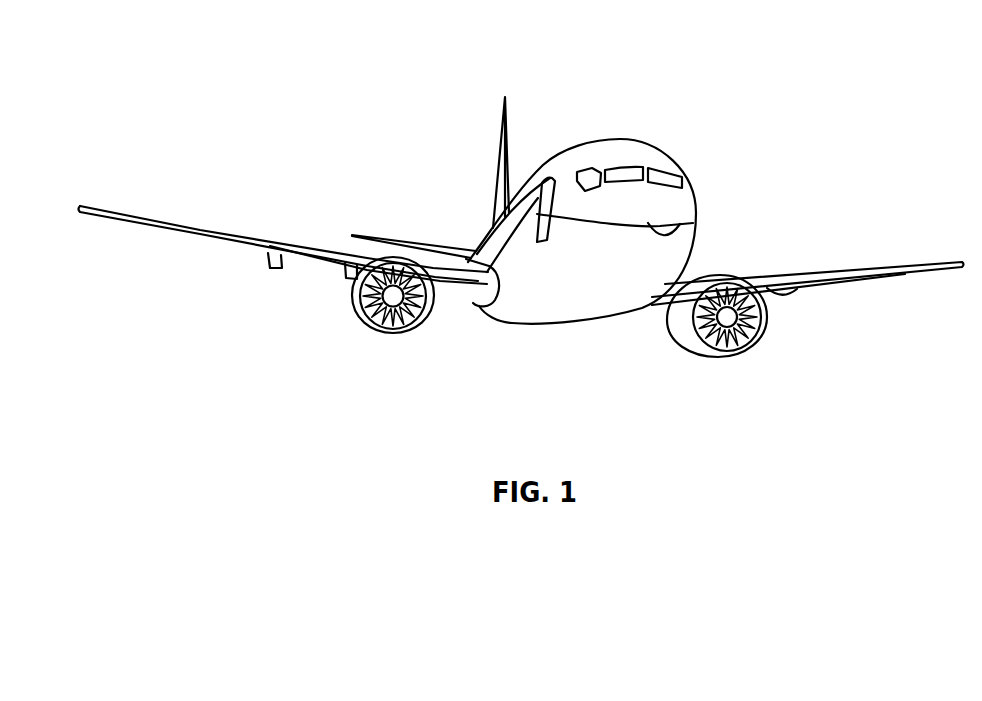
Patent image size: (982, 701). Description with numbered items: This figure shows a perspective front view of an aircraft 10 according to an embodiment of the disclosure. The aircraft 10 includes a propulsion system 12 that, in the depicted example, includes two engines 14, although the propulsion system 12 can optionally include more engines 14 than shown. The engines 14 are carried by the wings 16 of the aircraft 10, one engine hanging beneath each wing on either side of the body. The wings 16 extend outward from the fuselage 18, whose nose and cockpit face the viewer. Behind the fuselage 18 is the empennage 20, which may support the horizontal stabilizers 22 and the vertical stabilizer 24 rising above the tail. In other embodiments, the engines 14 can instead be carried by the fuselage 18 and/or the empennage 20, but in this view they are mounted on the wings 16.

The aircraft 10 is at (300, 77).
The propulsion system 12 is at (778, 354).
The engines 14 is at (393, 338).
The wings 16 is at (200, 231).
The fuselage 18 is at (693, 225).
The empennage 20 is at (492, 222).
The horizontal stabilizers 22 is at (380, 240).
The vertical stabilizer 24 is at (501, 131).